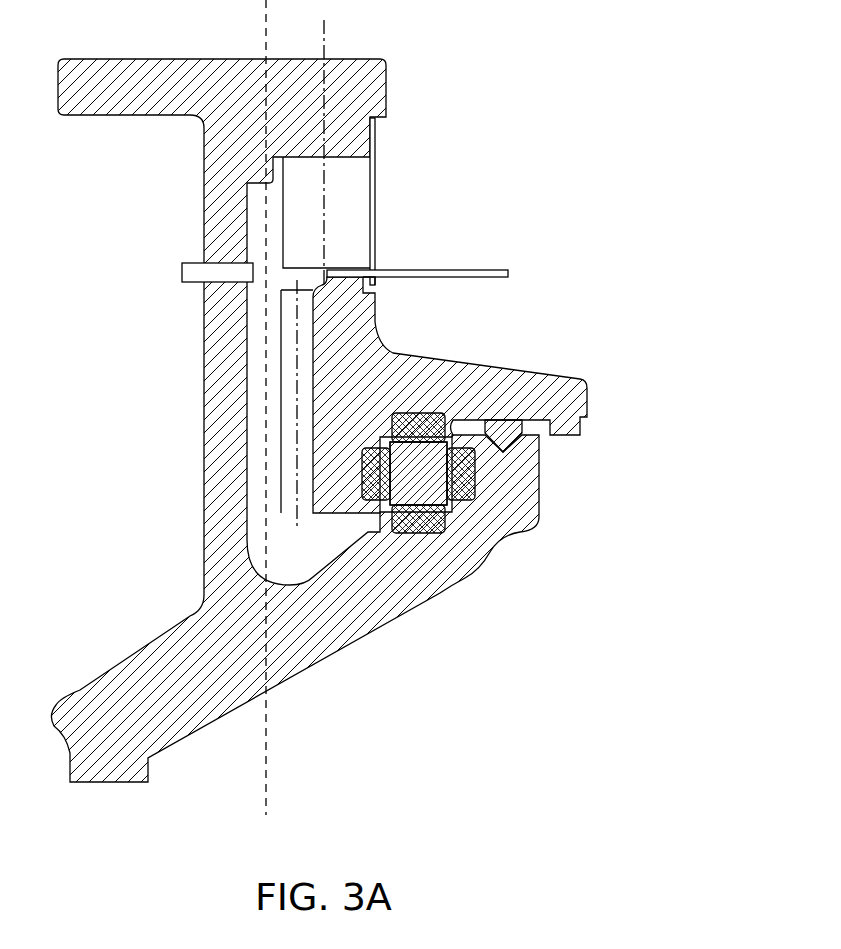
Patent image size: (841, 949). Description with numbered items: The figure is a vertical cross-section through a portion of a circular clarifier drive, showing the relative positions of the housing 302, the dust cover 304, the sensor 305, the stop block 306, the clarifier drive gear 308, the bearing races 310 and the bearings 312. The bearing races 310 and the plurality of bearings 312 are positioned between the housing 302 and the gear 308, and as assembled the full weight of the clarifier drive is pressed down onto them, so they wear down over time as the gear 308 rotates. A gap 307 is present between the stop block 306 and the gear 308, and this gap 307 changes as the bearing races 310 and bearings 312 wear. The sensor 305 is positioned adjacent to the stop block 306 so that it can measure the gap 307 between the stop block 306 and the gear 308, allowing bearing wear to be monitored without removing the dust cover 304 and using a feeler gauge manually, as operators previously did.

The housing 302 is at (295, 420).
The dust cover 304 is at (386, 162).
The sensor 305 is at (182, 272).
The stop block 306 is at (362, 254).
The gap 307 is at (494, 254).
The clarifier drive gear 308 is at (594, 378).
The bearing races 310 is at (456, 541).
The bearings 312 is at (420, 473).